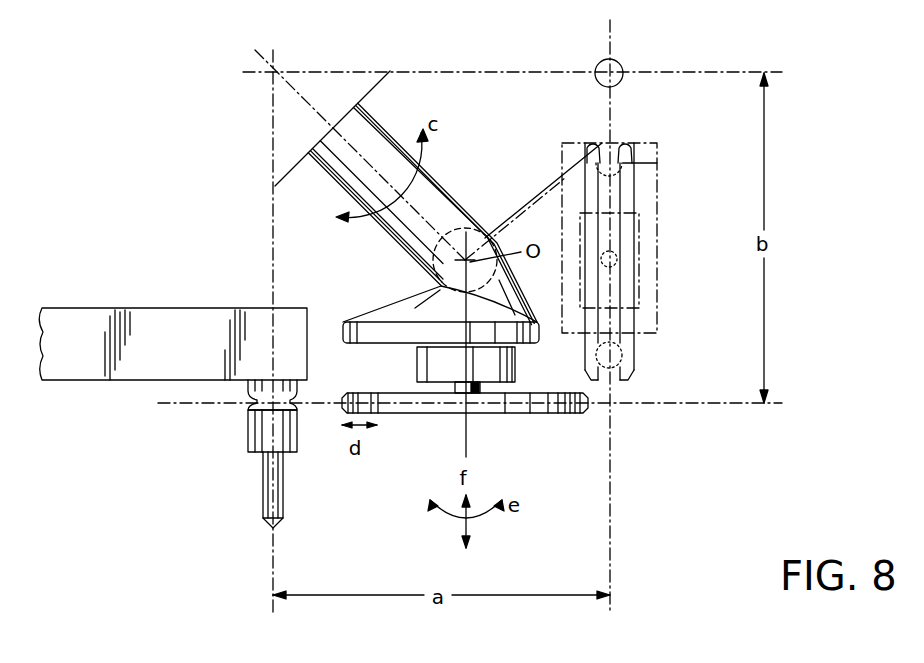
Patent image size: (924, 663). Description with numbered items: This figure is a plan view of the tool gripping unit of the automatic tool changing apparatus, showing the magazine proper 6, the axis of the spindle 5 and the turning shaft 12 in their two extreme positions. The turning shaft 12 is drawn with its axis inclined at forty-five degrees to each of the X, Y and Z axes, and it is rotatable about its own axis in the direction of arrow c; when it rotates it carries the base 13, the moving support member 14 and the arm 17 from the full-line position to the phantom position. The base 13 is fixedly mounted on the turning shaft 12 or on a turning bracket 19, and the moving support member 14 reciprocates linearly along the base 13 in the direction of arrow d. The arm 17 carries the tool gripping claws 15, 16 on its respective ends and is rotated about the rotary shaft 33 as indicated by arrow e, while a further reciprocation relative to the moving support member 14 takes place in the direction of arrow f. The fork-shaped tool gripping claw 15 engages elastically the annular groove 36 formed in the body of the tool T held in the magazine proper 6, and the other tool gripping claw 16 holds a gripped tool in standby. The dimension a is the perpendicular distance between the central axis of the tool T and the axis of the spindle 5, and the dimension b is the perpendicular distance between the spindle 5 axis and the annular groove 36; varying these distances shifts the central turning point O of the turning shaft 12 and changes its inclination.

The spindle 5 is at (618, 64).
The magazine proper 6 is at (78, 371).
The turning shaft 12 is at (442, 187).
The turning bracket 19 is at (422, 213).
The base 13 is at (393, 308).
The moving support member 14 is at (427, 363).
The tool gripping claw 15 is at (657, 163).
The tool gripping claw 16 is at (623, 355).
The arm 17 is at (392, 413).
The rotary shaft 33 is at (481, 390).
The annular groove 36 is at (257, 405).
The tool T is at (257, 433).